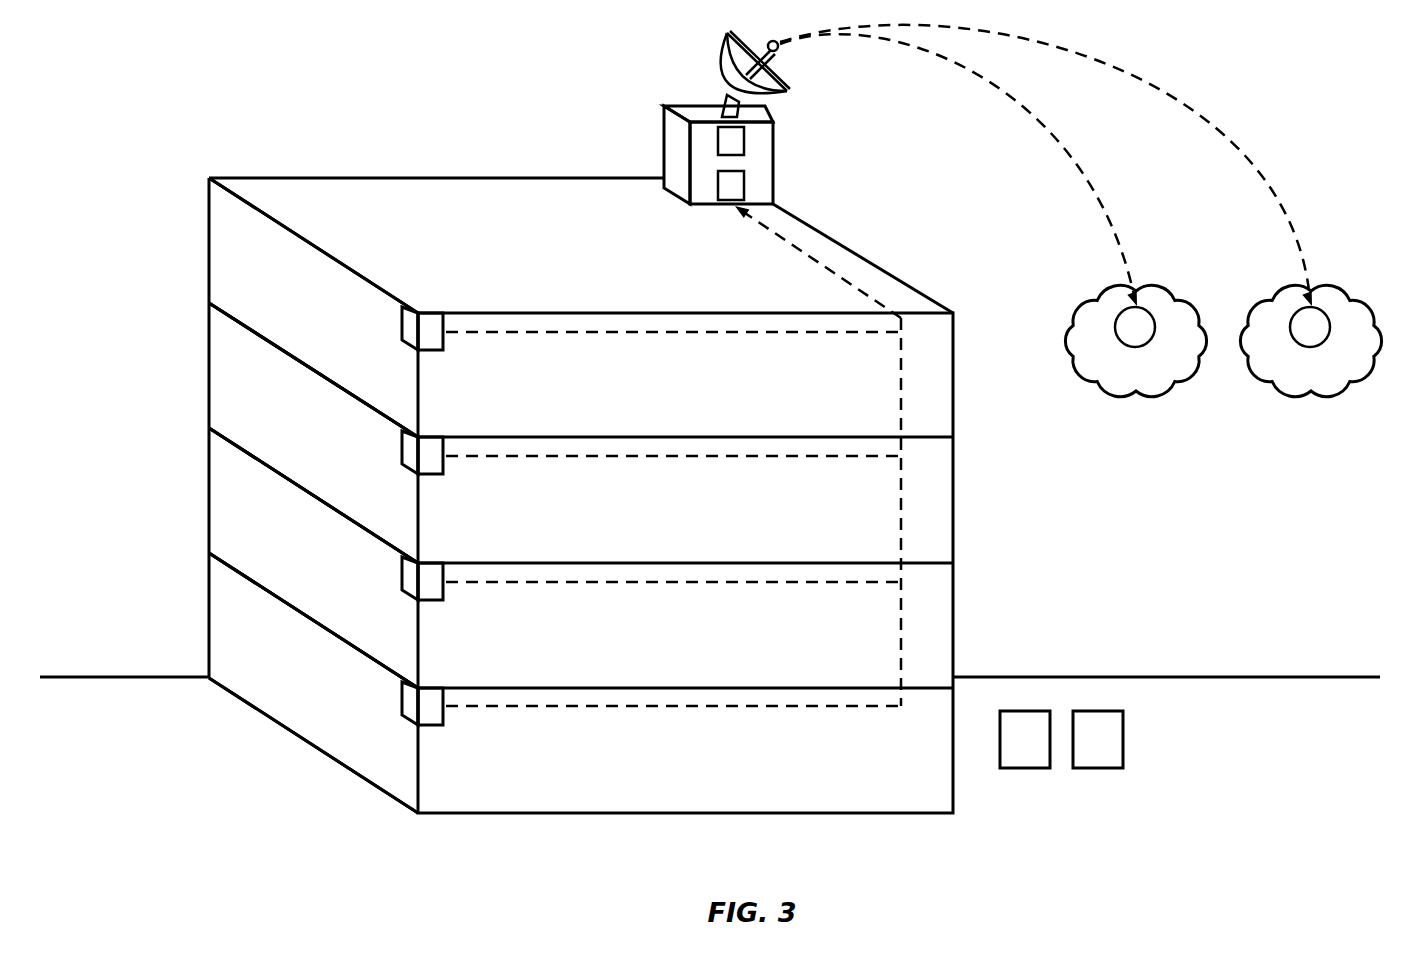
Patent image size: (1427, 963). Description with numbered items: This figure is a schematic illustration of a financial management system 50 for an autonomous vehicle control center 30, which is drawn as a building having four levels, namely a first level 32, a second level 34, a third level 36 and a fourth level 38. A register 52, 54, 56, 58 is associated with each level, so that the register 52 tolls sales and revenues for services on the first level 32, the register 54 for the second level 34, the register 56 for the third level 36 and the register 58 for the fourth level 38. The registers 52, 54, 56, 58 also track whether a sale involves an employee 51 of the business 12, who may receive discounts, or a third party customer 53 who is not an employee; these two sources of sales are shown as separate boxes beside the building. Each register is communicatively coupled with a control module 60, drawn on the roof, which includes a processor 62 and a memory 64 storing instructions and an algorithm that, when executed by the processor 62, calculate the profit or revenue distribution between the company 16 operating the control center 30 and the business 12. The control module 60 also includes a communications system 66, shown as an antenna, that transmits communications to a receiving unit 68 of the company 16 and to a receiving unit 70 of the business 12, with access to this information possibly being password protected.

The autonomous vehicle control center 30 is at (273, 203).
The first level 32 is at (226, 620).
The second level 34 is at (226, 490).
The third level 36 is at (226, 363).
The fourth level 38 is at (226, 233).
The financial management system 50 is at (668, 46).
The employee 51 is at (1025, 711).
The register 52 is at (432, 727).
The third party customer 53 is at (1099, 711).
The register 54 is at (432, 602).
The register 56 is at (432, 476).
The register 58 is at (432, 352).
The control module 60 is at (720, 152).
The processor 62 is at (745, 140).
The memory 64 is at (745, 186).
The communications system 66 is at (722, 50).
The receiving unit 68 is at (1157, 327).
The receiving unit 70 is at (1332, 327).
The company 16 is at (1150, 321).
The business 12 is at (1326, 321).